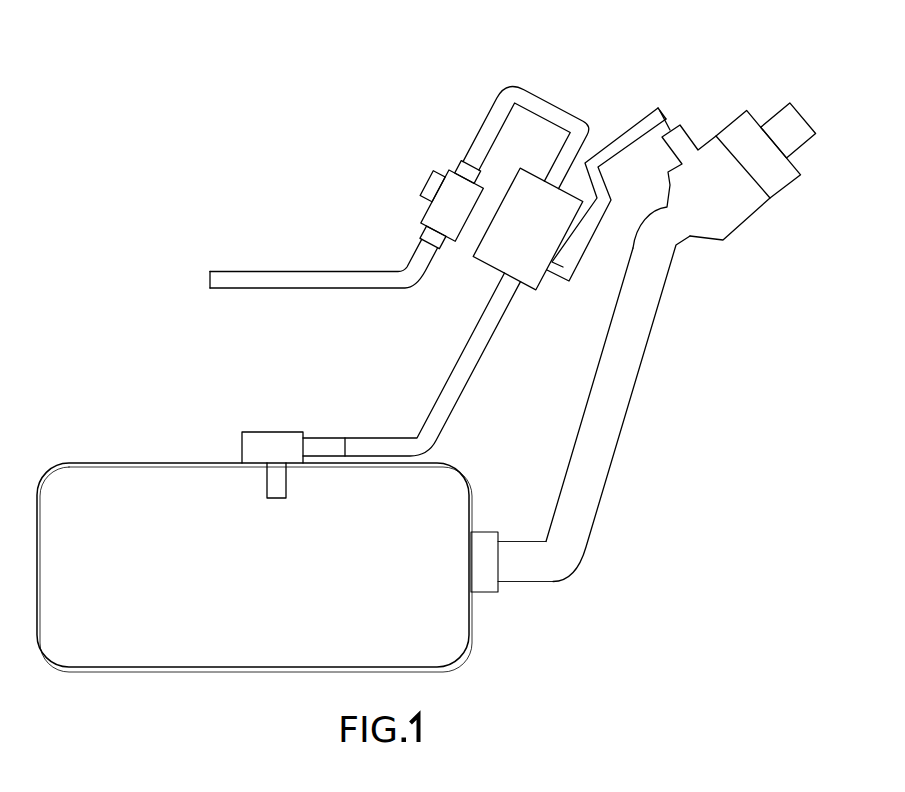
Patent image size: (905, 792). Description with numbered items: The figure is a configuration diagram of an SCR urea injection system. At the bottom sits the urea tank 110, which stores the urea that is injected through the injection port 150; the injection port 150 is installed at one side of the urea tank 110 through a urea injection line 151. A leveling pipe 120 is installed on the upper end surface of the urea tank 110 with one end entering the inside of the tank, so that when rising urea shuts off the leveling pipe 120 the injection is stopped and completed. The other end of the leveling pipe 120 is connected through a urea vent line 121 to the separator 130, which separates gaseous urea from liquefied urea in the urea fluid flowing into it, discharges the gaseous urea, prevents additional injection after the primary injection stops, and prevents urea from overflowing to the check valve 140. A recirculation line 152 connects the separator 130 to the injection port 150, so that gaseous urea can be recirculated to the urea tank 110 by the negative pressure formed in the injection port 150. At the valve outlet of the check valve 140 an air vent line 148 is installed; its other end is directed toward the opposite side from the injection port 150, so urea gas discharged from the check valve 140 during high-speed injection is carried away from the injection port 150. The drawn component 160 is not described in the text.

The urea tank 110 is at (92, 463).
The leveling pipe 120 is at (272, 442).
The urea vent line 121 is at (453, 387).
The separator 130 is at (533, 185).
The check valve 140 is at (441, 203).
The air vent line 148 is at (272, 271).
The injection port 150 is at (730, 208).
The urea injection line 151 is at (626, 404).
The recirculation line 152 is at (659, 113).
The actuator 160 is at (780, 180).